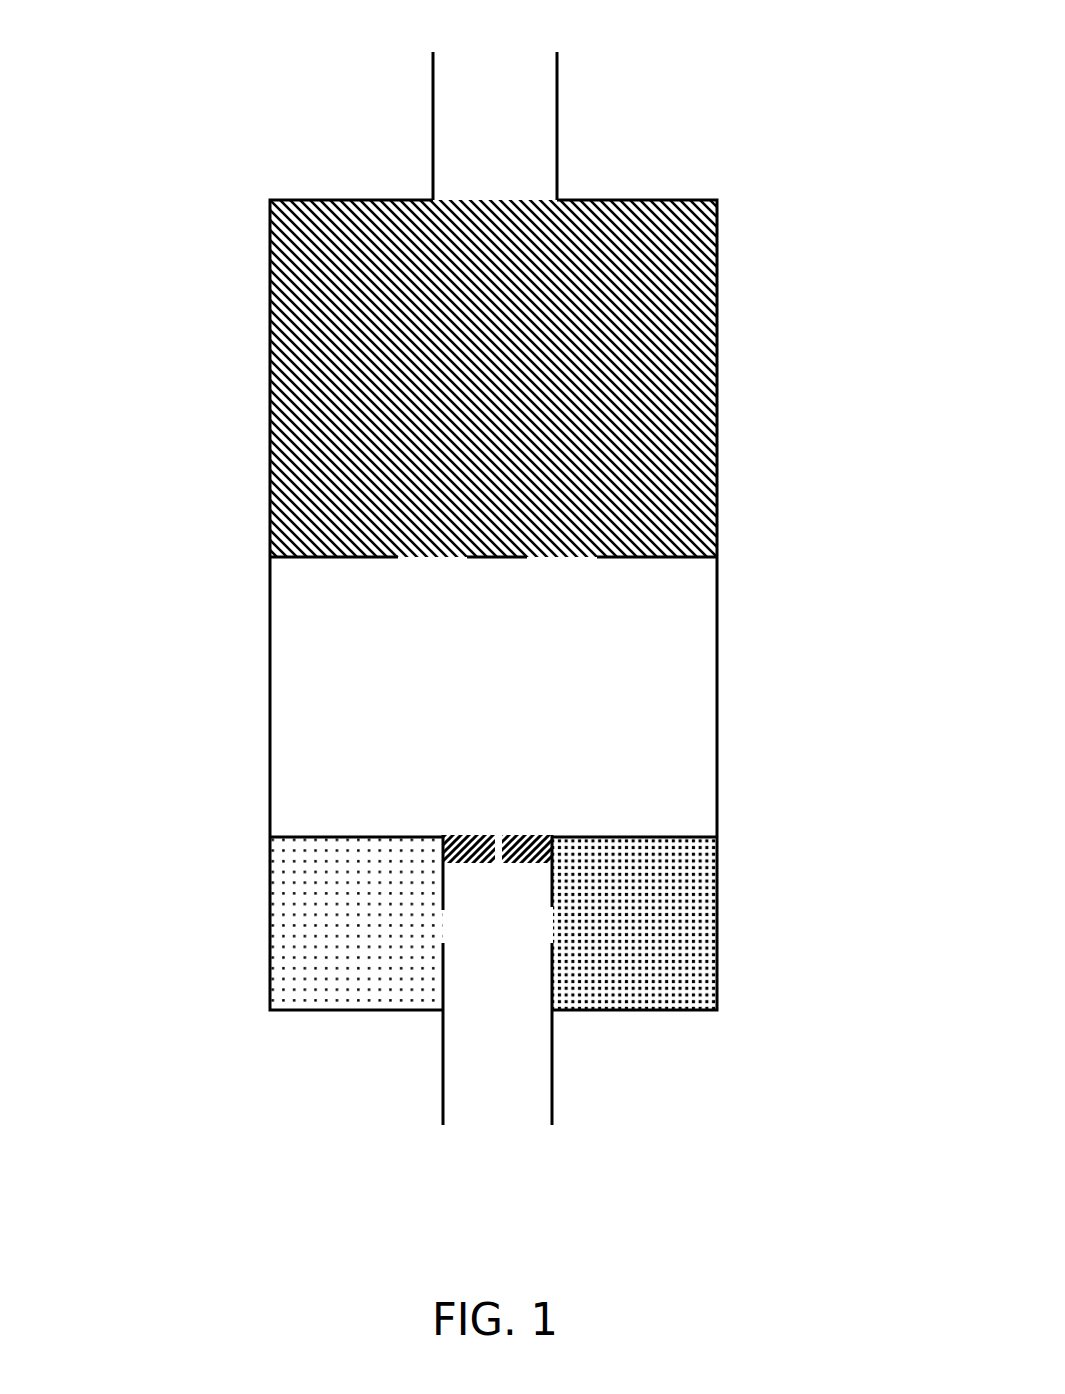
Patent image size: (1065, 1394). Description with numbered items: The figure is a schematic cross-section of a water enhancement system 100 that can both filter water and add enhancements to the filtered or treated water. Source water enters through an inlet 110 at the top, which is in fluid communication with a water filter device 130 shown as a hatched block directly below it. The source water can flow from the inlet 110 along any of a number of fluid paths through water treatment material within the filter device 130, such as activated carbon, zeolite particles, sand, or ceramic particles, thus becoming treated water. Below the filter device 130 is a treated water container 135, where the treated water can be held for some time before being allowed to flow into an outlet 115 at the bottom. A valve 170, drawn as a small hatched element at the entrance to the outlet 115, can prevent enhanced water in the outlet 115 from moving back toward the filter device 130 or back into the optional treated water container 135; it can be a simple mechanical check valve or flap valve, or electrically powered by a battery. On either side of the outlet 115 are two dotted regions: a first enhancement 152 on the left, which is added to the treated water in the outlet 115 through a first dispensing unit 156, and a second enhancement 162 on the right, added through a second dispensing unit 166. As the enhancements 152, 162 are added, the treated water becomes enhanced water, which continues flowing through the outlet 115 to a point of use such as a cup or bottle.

The water enhancement system 100 is at (236, 134).
The inlet 110 is at (502, 135).
The outlet 115 is at (500, 977).
The water filter device 130 is at (528, 393).
The treated water container 135 is at (530, 720).
The first enhancement 152 is at (358, 917).
The first dispensing unit 156 is at (442, 927).
The second enhancement 162 is at (658, 928).
The second dispensing unit 166 is at (550, 925).
The valve 170 is at (545, 807).